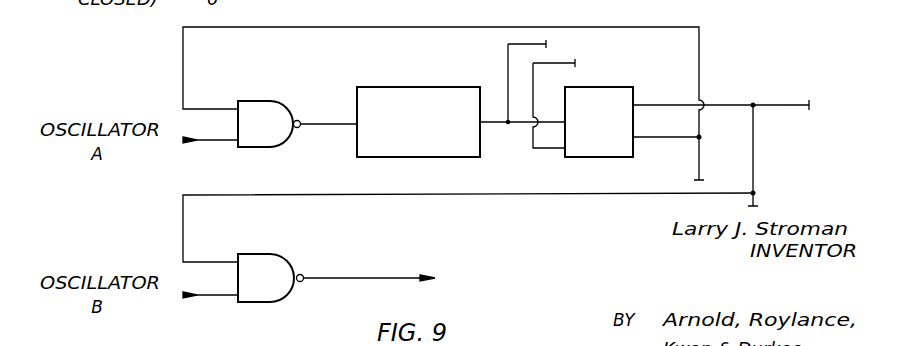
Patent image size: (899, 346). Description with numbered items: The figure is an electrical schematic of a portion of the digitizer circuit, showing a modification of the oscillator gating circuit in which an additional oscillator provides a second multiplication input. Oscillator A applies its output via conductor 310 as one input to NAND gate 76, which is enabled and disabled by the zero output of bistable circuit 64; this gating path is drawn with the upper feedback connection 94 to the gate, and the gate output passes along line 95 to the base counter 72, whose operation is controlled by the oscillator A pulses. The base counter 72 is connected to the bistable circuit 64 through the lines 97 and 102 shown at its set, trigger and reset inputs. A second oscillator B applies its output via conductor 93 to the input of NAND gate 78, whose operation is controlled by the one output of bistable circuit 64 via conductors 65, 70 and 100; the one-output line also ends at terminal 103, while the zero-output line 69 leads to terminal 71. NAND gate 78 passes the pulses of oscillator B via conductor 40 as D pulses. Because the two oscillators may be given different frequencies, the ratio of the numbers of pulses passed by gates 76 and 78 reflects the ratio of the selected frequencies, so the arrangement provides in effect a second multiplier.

The NAND gate 76 is at (261, 100).
The feedback line from counter output to gate input 94 is at (329, 28).
The conductor 310 is at (216, 143).
The gate output line to base counter 95 is at (333, 128).
The base counter 72 is at (408, 87).
The counter output terminal line 97 is at (520, 44).
The reset/set loop line 102 is at (571, 62).
The bistable circuit 64 is at (618, 87).
The conductor 65 is at (729, 104).
The output terminal 103 is at (788, 100).
The flip-flop 0 output line 69 is at (671, 139).
The output terminal 71 is at (702, 163).
The conductor 70 is at (756, 163).
The conductor 100 is at (477, 194).
The NAND gate 78 is at (283, 258).
The conductor 93 is at (216, 300).
The conductor 40 is at (374, 277).